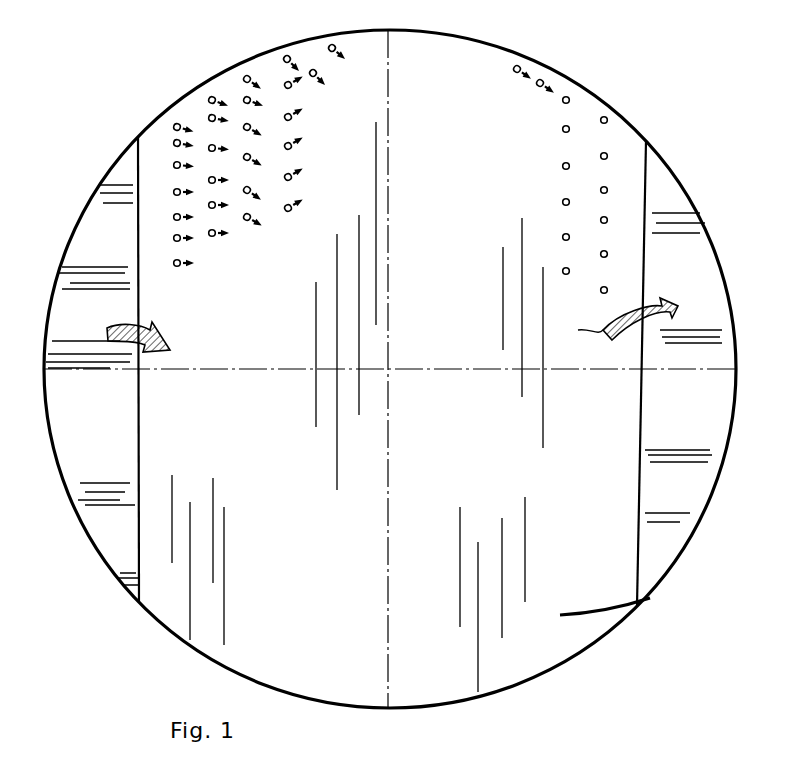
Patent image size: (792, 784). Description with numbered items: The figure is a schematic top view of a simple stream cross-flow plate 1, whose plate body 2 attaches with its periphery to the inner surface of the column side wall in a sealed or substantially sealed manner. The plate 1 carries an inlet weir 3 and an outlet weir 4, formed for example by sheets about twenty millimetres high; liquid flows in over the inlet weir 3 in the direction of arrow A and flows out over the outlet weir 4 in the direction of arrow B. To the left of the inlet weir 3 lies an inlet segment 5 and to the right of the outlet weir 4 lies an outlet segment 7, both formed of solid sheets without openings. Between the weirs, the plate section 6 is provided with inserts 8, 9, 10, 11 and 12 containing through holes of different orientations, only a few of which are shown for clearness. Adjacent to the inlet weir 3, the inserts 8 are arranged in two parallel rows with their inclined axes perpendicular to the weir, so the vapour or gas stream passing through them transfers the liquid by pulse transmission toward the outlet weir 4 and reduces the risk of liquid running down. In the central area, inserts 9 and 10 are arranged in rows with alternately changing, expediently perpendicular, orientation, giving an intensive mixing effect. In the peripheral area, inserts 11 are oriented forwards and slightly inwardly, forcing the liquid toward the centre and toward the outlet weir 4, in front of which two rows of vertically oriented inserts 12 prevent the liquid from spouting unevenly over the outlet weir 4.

The plate 1 is at (720, 471).
The plate body 2 is at (577, 615).
The inlet weir 3 is at (138, 545).
The outlet weir 4 is at (641, 515).
The inlet segment 5 is at (100, 418).
The plate section 6 is at (426, 418).
The outlet segment 7 is at (696, 418).
The inserts 8 is at (180, 240).
The inserts 9 is at (249, 193).
The inserts 10 is at (290, 148).
The inserts 11 is at (330, 48).
The inserts 12 is at (563, 102).